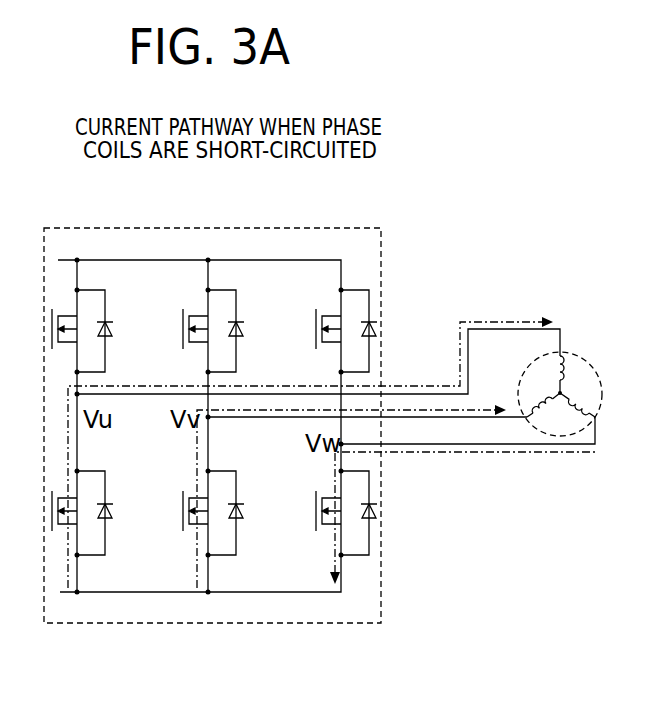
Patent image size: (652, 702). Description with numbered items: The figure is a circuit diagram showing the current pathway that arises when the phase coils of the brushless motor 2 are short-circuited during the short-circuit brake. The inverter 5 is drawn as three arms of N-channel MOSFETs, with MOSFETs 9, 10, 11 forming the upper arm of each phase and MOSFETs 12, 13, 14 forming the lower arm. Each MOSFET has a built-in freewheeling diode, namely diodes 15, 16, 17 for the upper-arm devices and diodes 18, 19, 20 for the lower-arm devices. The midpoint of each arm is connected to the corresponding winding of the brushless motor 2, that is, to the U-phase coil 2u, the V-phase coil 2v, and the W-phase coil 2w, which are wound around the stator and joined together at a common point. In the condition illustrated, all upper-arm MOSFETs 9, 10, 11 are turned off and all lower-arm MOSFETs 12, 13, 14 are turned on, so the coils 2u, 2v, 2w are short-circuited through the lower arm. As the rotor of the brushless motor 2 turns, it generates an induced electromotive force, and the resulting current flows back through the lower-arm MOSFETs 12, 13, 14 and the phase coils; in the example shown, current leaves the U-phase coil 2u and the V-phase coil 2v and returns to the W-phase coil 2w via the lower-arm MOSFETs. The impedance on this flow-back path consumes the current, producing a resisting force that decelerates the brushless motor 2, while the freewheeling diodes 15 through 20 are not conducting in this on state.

The inverter 5 is at (270, 228).
The MOSFET 9 is at (51, 319).
The MOSFET 10 is at (182, 319).
The MOSFET 11 is at (315, 319).
The MOSFET 12 is at (51, 501).
The MOSFET 13 is at (182, 501).
The MOSFET 14 is at (315, 501).
The freewheeling diode 15 is at (102, 326).
The freewheeling diode 16 is at (233, 326).
The freewheeling diode 17 is at (364, 326).
The freewheeling diode 18 is at (103, 508).
The freewheeling diode 19 is at (233, 509).
The freewheeling diode 20 is at (365, 509).
The brushless motor 2 is at (570, 381).
The U-phase coil 2u is at (578, 372).
The V-phase coil 2v is at (541, 399).
The W-phase coil 2w is at (577, 412).